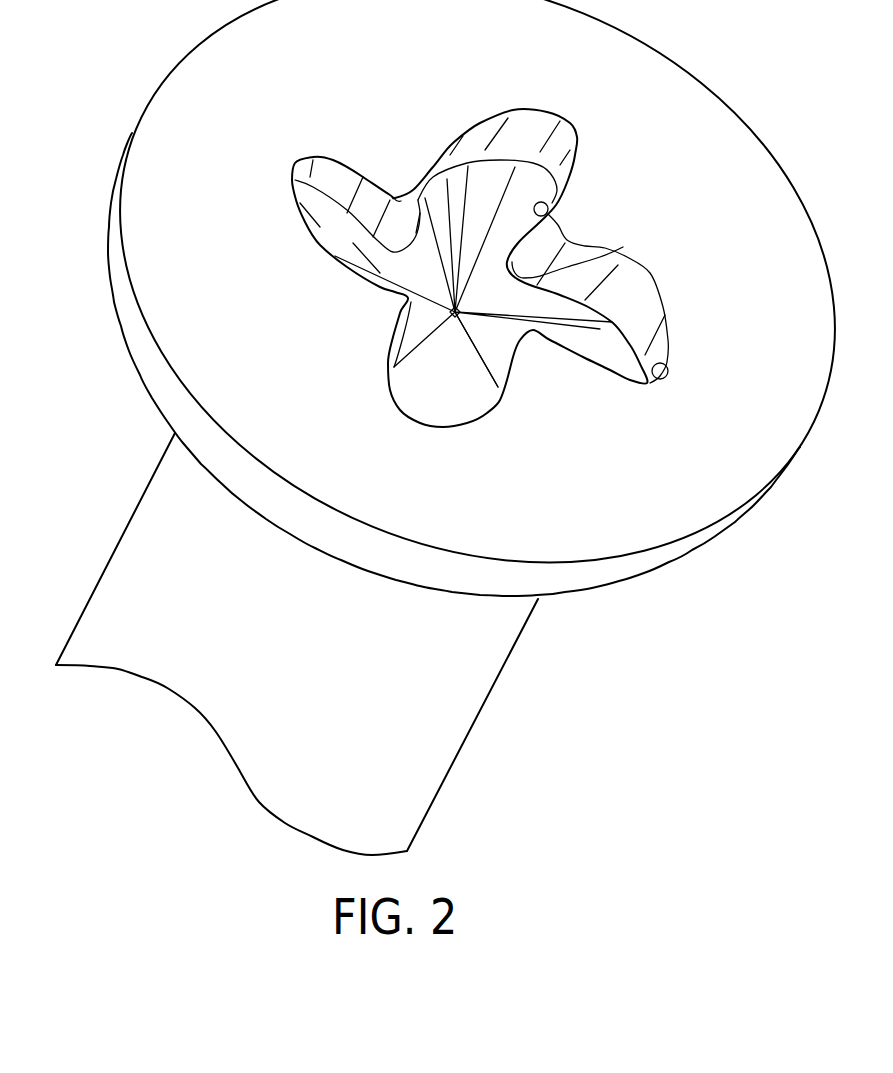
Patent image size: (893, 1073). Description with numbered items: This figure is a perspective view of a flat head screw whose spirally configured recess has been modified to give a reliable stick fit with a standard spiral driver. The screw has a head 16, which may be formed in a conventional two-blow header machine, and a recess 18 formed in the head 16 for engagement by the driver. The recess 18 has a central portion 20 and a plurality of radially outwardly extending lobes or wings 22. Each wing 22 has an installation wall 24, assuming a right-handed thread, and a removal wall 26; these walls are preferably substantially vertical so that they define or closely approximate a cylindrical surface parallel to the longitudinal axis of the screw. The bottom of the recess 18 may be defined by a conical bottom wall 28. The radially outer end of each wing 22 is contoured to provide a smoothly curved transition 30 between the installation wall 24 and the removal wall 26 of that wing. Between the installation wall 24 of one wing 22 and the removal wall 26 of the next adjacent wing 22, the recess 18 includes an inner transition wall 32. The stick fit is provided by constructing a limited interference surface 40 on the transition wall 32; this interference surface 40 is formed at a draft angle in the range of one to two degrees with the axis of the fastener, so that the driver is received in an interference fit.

The head 16 is at (150, 147).
The recess 18 is at (397, 298).
The central portion 20 is at (460, 200).
The wings 22 is at (536, 170).
The installation wall 24 is at (330, 160).
The removal wall 26 is at (493, 128).
The conical bottom wall 28 is at (497, 388).
The smoothly curved transition 30 is at (557, 130).
The inner transition wall 32 is at (385, 187).
The interference surface 40 is at (416, 195).